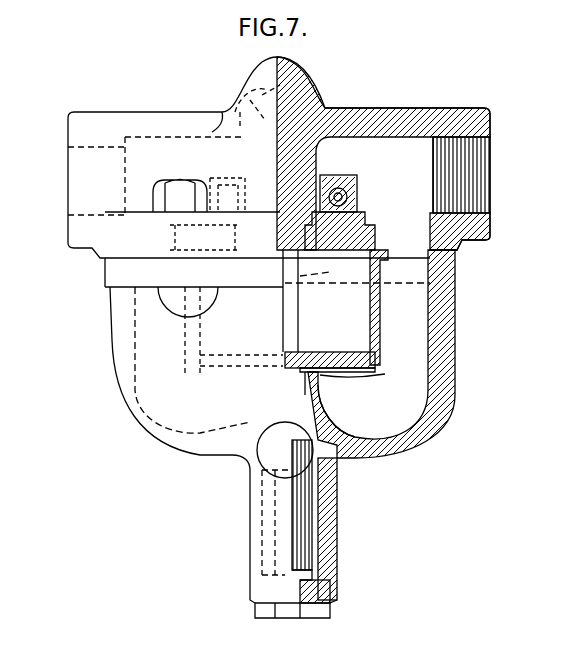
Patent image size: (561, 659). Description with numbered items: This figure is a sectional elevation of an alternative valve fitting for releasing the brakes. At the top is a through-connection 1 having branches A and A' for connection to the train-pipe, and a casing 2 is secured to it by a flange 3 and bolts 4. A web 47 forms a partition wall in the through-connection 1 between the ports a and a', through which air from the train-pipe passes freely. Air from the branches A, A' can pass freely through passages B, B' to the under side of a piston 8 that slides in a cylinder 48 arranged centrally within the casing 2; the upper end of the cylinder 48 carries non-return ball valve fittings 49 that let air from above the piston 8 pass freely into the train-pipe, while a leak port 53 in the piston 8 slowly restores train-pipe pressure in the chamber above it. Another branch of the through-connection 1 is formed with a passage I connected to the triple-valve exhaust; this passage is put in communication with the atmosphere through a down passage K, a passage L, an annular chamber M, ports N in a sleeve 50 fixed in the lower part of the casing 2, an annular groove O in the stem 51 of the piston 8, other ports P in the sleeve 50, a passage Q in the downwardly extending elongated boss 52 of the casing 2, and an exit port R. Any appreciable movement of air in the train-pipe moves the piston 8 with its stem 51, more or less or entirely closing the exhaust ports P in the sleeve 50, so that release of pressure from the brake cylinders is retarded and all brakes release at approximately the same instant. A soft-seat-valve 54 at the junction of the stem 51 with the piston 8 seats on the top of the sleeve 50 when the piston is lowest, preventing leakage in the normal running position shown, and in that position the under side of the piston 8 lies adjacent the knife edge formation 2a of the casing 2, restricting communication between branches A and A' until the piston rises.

The through-connection 1 is at (437, 118).
The casing 2 is at (445, 342).
The flange 3 is at (113, 276).
The bolts 4 is at (183, 180).
The piston 8 is at (350, 356).
The web 47 is at (312, 186).
The cylinder 48 is at (370, 306).
The non-return ball valve fittings 49 is at (190, 222).
The sleeve 50 is at (318, 418).
The stem 51 is at (316, 403).
The elongated boss 52 is at (258, 566).
The leak port 53 is at (318, 356).
The soft-seat-valve 54 is at (330, 378).
The branch A is at (55, 183).
The branch A' is at (497, 183).
The passage B is at (196, 378).
The passage B' is at (411, 327).
The down passage K is at (356, 301).
The passage I is at (282, 245).
The passage L is at (268, 455).
The annular chamber M is at (316, 448).
The ports N is at (312, 465).
The annular groove O is at (314, 535).
The ports P is at (308, 480).
The passage Q is at (330, 566).
The exit port R is at (302, 618).
The port a is at (216, 98).
The port b is at (262, 95).
The port a' is at (347, 94).
The knife edge formation 2a is at (268, 380).